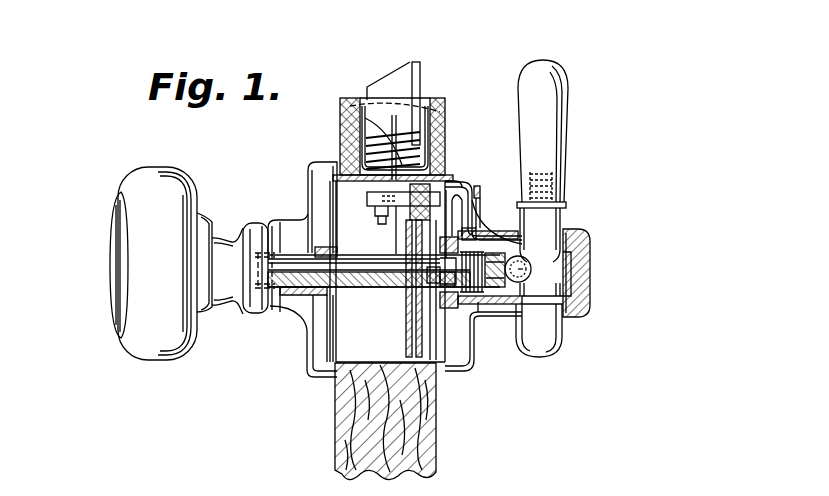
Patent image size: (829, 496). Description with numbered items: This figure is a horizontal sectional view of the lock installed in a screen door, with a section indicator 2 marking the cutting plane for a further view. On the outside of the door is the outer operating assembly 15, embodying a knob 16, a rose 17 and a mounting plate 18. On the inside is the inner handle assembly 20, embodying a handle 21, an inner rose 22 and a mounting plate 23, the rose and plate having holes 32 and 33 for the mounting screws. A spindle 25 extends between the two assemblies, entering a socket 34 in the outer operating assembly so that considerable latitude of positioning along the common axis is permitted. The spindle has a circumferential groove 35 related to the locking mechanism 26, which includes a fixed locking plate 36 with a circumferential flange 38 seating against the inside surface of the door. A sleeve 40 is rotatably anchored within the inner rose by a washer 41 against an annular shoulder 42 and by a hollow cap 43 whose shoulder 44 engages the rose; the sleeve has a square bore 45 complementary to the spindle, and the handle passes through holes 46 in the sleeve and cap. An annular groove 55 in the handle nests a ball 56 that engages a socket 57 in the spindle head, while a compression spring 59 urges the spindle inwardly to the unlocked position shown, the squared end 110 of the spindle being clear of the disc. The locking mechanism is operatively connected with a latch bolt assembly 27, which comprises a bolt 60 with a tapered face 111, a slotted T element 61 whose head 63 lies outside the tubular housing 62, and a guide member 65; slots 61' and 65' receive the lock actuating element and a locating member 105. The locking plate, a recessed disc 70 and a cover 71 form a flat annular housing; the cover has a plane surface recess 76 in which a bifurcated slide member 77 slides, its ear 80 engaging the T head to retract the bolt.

The outer operating assembly 15 is at (188, 167).
The knob 16 is at (123, 186).
The rose 17 is at (313, 162).
The mounting plate 18 is at (318, 326).
The inner handle assembly 20 is at (600, 150).
The handle 21 is at (568, 78).
The inner rose 22 is at (476, 194).
The mounting plate 23 is at (496, 312).
The spindle 25 is at (370, 289).
The locking mechanism 26 is at (400, 340).
The latch bolt assembly 27 is at (403, 64).
The hole 32 is at (518, 222).
The hole 33 is at (496, 236).
The socket 34 is at (283, 311).
The circumferential groove 35 is at (414, 265).
The locking plate 36 is at (428, 384).
The circumferential flange 38 is at (447, 176).
The sleeve 40 is at (490, 306).
The washer 41 is at (480, 195).
The annular shoulder 42 is at (480, 182).
The hollow cap 43 is at (578, 316).
The shoulder 44 is at (508, 322).
The square bore 45 is at (416, 240).
The hole 46 is at (515, 236).
The annular groove 55 is at (592, 272).
The ball 56 is at (590, 246).
The socket 57 is at (532, 269).
The compression spring 59 is at (478, 226).
The bolt 60 is at (420, 82).
The slotted T element 61 is at (332, 136).
The slot 61' is at (392, 195).
The tubular housing 62 is at (445, 106).
The head 63 is at (408, 220).
The guide member 65 is at (365, 229).
The slot 65' is at (370, 216).
The disc 70 is at (466, 184).
The cover 71 is at (424, 290).
The plane surface recess 76 is at (396, 250).
The bifurcated slide member 77 is at (424, 300).
The ear 80 is at (360, 200).
The locating member 105 is at (432, 140).
The squared end 110 is at (474, 210).
The tapered face 111 is at (388, 78).
The section line 2 is at (177, 267).